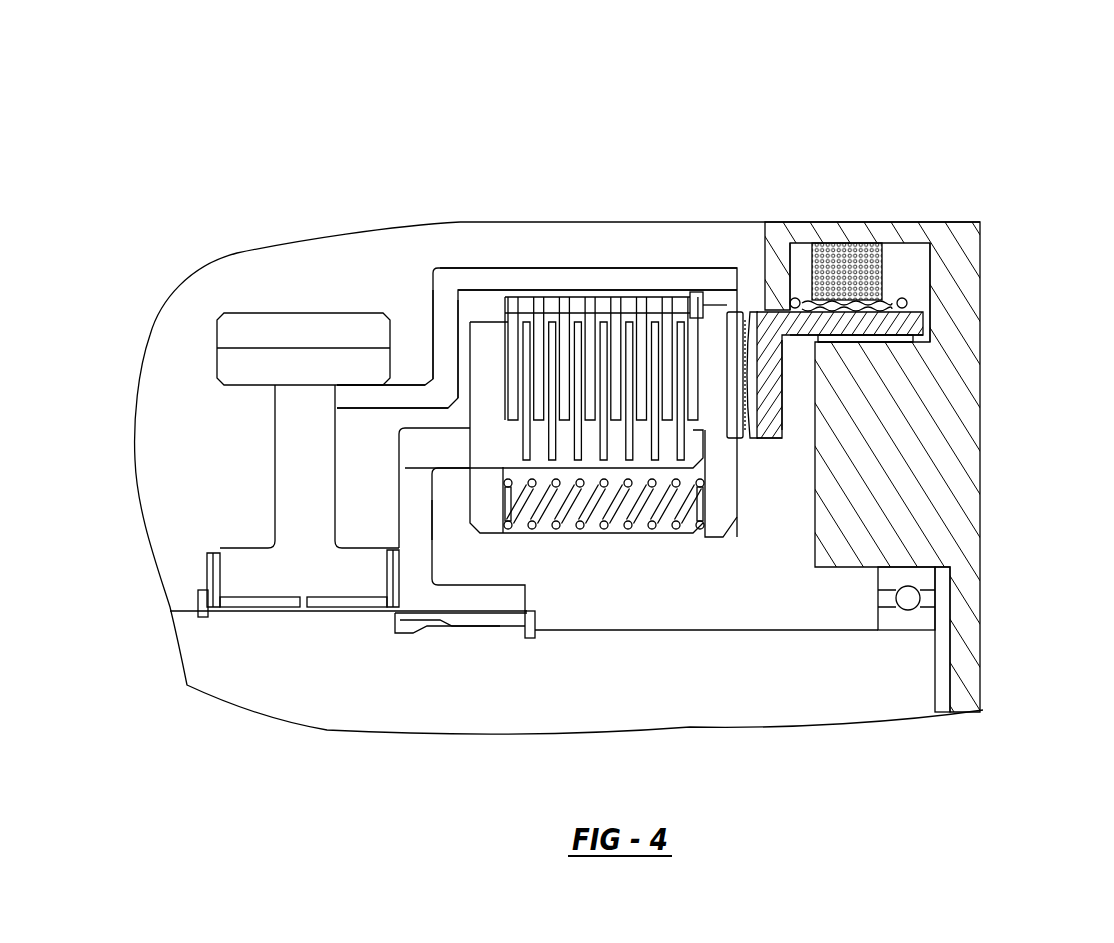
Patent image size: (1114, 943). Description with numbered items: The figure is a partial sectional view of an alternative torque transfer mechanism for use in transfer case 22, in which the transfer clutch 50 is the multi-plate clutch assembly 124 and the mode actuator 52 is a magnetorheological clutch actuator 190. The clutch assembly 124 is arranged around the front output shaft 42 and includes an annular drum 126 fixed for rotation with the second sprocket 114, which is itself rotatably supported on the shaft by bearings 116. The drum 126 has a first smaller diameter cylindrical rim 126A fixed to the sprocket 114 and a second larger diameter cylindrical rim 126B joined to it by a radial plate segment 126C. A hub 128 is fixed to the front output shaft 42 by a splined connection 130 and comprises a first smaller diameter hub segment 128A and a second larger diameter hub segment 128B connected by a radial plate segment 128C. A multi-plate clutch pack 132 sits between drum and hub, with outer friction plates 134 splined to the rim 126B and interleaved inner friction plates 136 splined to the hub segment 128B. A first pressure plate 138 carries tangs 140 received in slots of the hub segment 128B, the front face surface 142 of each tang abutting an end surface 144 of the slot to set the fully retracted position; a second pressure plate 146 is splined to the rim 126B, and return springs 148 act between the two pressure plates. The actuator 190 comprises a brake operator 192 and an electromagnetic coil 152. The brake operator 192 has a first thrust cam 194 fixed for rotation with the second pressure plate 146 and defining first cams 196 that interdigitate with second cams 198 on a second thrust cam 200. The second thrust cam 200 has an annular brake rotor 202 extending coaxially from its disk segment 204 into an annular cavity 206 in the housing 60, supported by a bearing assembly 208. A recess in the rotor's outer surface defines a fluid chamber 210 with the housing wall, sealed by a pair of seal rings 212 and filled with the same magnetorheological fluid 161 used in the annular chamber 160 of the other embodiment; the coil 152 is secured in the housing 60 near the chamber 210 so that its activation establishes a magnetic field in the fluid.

The transfer case 22 is at (805, 79).
The front output shaft 42 is at (217, 652).
The transfer clutch 50 is at (694, 150).
The mode actuator 52 is at (893, 123).
The housing 60 is at (975, 520).
The second sprocket 114 is at (296, 463).
The bearings 116 is at (263, 598).
The multi-plate clutch assembly 124 is at (616, 343).
The annular drum 126 is at (438, 285).
The first smaller diameter cylindrical rim 126A is at (365, 397).
The second larger diameter cylindrical rim 126B is at (488, 278).
The radial plate segment 126C is at (448, 327).
The hub 128 is at (400, 497).
The first smaller diameter hub segment 128A is at (483, 611).
The second larger diameter hub segment 128B is at (540, 458).
The radial plate segment 128C is at (417, 515).
The splined connection 130 is at (455, 620).
The multi-plate clutch pack 132 is at (616, 298).
The outer friction plates 134 is at (515, 327).
The inner friction plates 136 is at (527, 430).
The first pressure plate 138 is at (487, 407).
The tangs 140 is at (490, 457).
The front face surface 142 is at (466, 470).
The end surface 144 is at (478, 447).
The second pressure plate 146 is at (723, 502).
The return springs 148 is at (632, 526).
The electromagnetic coil 152 is at (868, 243).
The annular chamber 160 is at (537, 618).
The magnetorheological fluid 161 is at (858, 310).
The magnetorheological clutch actuator 190 is at (980, 208).
The brake operator 192 is at (773, 446).
The first thrust cam 194 is at (730, 343).
The first cams 196 is at (746, 440).
The second cams 198 is at (748, 362).
The second thrust cam 200 is at (770, 300).
The annular brake rotor 202 is at (926, 320).
The disk segment 204 is at (743, 367).
The annular cavity 206 is at (915, 340).
The bearing assembly 208 is at (905, 345).
The fluid chamber 210 is at (882, 300).
The seal rings 212 is at (797, 298).